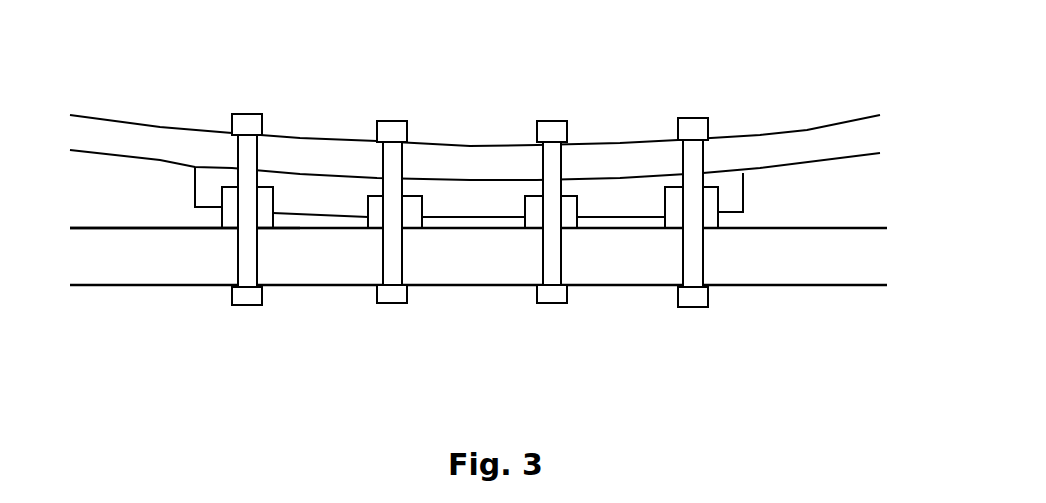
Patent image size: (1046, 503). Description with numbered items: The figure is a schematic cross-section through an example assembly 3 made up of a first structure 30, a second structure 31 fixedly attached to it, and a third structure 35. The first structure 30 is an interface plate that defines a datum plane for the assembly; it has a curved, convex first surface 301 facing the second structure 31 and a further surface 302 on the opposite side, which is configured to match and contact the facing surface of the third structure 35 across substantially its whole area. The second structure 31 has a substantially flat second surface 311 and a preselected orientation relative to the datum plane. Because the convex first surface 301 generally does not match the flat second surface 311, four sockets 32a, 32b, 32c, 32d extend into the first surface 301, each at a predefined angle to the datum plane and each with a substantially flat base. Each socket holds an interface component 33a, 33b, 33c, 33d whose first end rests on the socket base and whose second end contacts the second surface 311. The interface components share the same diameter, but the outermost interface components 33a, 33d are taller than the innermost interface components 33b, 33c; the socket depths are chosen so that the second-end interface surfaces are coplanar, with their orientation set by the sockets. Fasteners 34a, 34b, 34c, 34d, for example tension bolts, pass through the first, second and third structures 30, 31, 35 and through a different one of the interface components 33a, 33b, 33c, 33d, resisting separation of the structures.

The assembly 3 is at (194, 65).
The first structure 30 is at (732, 194).
The first surface 301 is at (467, 216).
The further surface 302 is at (613, 180).
The second structure 31 is at (850, 261).
The second surface 311 is at (140, 228).
The socket 32a is at (260, 187).
The socket 32b is at (410, 196).
The socket 32c is at (570, 196).
The socket 32d is at (707, 188).
The interface component 33a is at (230, 217).
The interface component 33b is at (378, 218).
The interface component 33c is at (535, 220).
The interface component 33d is at (678, 217).
The fastener 34a is at (245, 114).
The fastener 34b is at (397, 121).
The fastener 34c is at (550, 121).
The fastener 34d is at (697, 118).
The third structure 35 is at (807, 138).